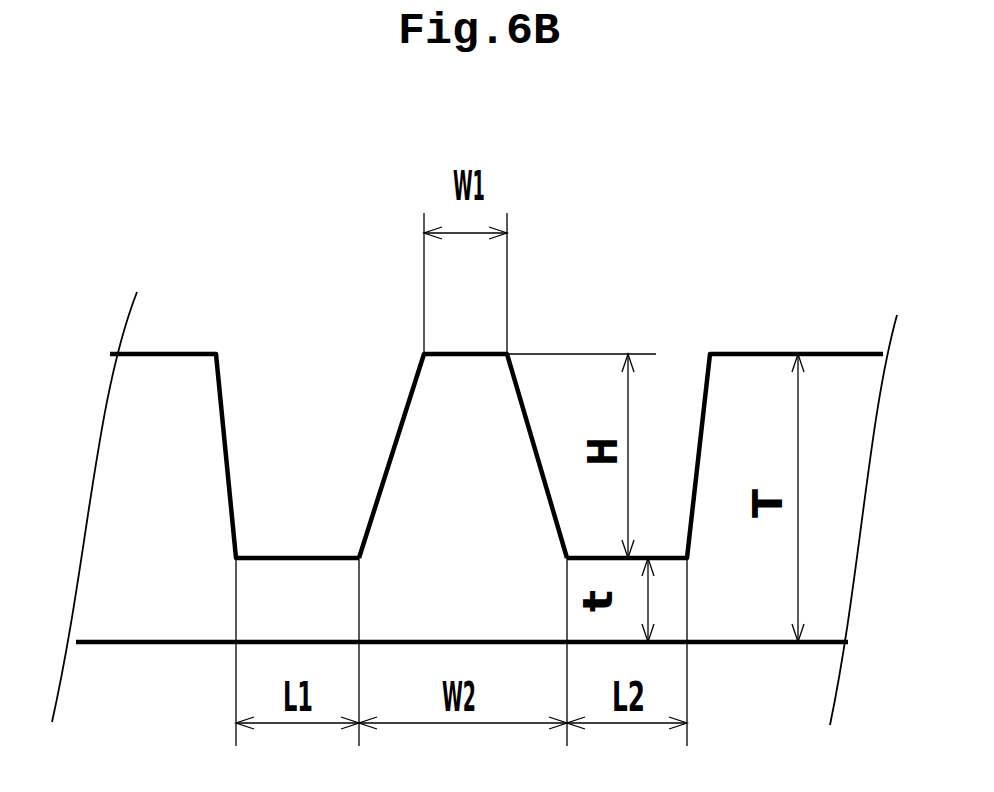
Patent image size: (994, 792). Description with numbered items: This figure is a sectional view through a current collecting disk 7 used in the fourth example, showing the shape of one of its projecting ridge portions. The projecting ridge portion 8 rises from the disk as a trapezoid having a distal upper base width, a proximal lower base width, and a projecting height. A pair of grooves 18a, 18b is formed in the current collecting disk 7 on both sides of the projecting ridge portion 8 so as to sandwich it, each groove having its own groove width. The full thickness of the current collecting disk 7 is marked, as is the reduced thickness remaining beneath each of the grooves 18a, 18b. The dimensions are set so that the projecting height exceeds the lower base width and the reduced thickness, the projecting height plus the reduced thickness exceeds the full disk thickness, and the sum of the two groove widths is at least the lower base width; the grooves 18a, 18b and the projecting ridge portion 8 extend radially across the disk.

The current collecting disk 7 is at (138, 618).
The projecting ridge portion 8 is at (423, 437).
The groove 18a is at (222, 388).
The groove 18b is at (705, 393).